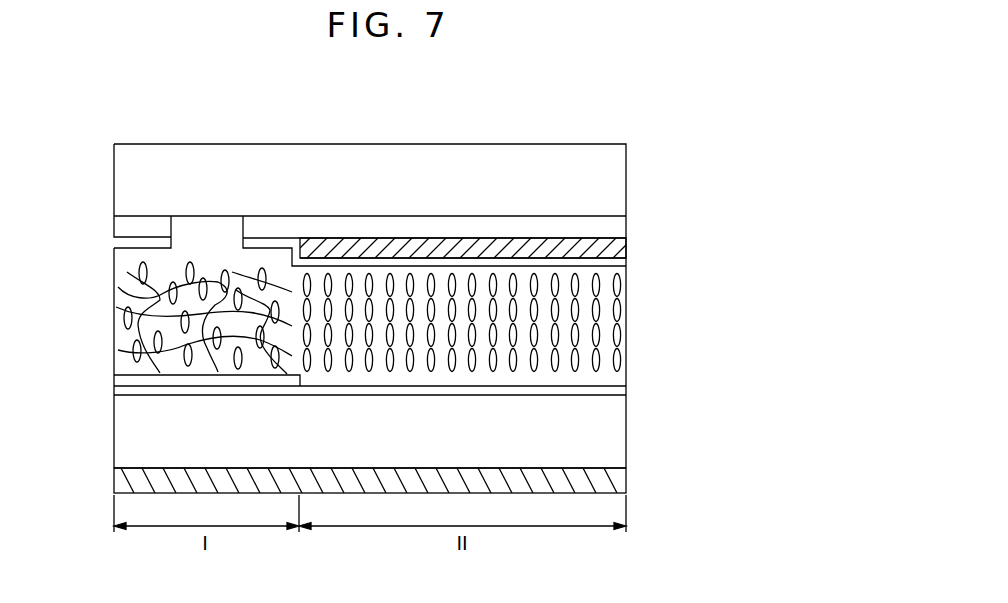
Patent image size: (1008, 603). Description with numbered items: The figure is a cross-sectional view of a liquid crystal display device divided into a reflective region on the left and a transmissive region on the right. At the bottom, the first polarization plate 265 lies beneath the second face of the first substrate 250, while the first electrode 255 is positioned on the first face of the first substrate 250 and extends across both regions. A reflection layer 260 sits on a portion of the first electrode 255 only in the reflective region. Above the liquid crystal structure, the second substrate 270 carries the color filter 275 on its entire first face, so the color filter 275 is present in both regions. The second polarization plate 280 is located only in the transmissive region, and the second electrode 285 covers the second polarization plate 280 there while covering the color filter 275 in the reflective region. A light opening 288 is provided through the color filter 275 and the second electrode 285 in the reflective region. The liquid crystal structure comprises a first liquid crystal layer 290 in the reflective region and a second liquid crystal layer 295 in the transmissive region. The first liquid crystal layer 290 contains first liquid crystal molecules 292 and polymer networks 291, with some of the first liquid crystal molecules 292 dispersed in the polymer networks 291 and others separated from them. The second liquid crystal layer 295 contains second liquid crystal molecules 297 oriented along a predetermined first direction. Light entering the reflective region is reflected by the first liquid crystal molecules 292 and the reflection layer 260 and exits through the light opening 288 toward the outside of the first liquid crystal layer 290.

The first substrate 250 is at (624, 434).
The first electrode 255 is at (624, 392).
The reflection layer 260 is at (113, 380).
The first polarization plate 265 is at (624, 481).
The second substrate 270 is at (624, 167).
The color filter 275 is at (624, 227).
The second polarization plate 280 is at (624, 247).
The second electrode 285 is at (624, 263).
The light opening 288 is at (215, 232).
The first liquid crystal layer 290 is at (53, 247).
The polymer networks 291 is at (125, 352).
The first liquid crystal molecules 292 is at (130, 320).
The second liquid crystal layer 295 is at (522, 327).
The second liquid crystal molecules 297 is at (621, 313).